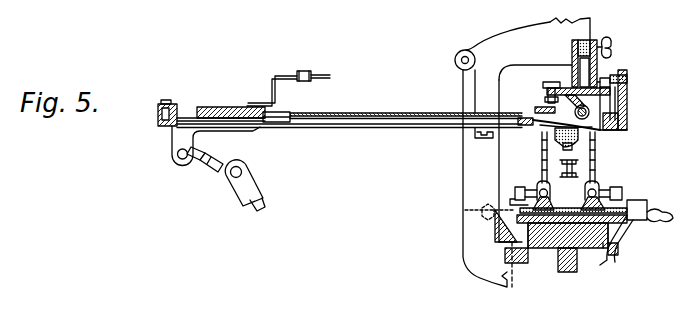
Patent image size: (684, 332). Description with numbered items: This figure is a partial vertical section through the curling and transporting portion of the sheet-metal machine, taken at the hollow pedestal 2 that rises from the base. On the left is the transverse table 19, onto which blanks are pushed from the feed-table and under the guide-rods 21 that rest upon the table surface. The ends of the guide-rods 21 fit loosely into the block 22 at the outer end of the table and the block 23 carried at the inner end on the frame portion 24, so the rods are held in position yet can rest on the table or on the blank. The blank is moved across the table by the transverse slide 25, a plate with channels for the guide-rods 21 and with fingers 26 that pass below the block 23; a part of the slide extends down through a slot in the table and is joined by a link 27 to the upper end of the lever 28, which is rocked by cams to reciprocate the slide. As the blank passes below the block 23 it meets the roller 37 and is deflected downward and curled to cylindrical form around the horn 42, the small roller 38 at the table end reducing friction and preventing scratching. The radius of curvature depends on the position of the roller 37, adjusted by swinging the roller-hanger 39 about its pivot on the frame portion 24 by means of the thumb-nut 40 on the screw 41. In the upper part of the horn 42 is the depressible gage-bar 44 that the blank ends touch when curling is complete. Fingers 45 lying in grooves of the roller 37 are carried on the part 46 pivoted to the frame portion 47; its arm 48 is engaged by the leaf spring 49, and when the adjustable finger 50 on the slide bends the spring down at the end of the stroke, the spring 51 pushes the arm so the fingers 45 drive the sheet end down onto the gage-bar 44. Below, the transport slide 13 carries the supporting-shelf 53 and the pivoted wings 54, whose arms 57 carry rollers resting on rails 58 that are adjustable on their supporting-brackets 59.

The hollow pedestal 2 is at (608, 262).
The transport slide 13 is at (558, 258).
The transverse table 19 is at (353, 124).
The guide-rods 21 is at (339, 113).
The block 22 is at (178, 108).
The block 23 is at (534, 109).
The frame portion 24 is at (544, 84).
The transverse slide 25 is at (210, 108).
The fingers 26 is at (288, 123).
The link 27 is at (206, 168).
The lever 28 is at (248, 205).
The roller 37 is at (597, 119).
The small roller 38 is at (592, 128).
The roller-hanger 39 is at (571, 73).
The thumb-nut 40 is at (609, 44).
The screw 41 is at (571, 48).
The horn 42 is at (554, 135).
The gage-bar 44 is at (524, 126).
The fingers 45 is at (596, 143).
The part 46 is at (589, 106).
The frame portion 47 is at (628, 100).
The arm 48 is at (616, 83).
The leaf spring 49 is at (606, 80).
The adjustable finger 50 is at (308, 73).
The spring 51 is at (627, 76).
The supporting-shelf 53 is at (570, 162).
The wings 54 is at (541, 160).
The arms 57 is at (537, 191).
The rails 58 is at (514, 194).
The supporting-brackets 59 is at (494, 230).